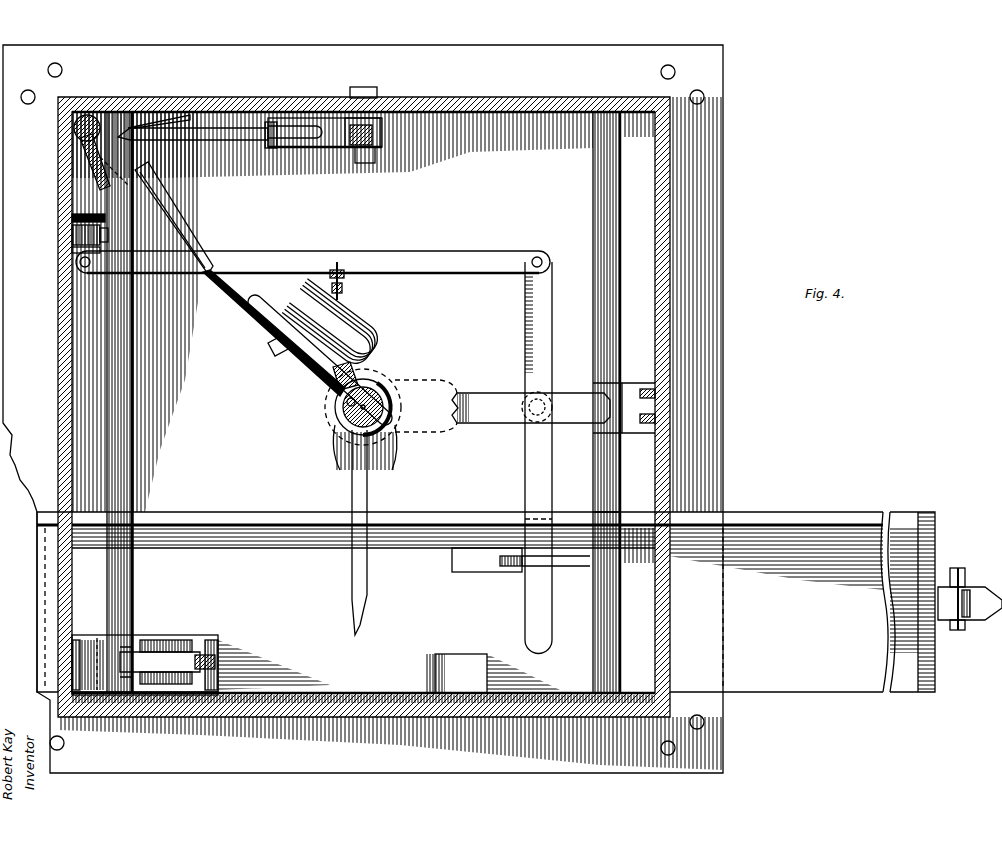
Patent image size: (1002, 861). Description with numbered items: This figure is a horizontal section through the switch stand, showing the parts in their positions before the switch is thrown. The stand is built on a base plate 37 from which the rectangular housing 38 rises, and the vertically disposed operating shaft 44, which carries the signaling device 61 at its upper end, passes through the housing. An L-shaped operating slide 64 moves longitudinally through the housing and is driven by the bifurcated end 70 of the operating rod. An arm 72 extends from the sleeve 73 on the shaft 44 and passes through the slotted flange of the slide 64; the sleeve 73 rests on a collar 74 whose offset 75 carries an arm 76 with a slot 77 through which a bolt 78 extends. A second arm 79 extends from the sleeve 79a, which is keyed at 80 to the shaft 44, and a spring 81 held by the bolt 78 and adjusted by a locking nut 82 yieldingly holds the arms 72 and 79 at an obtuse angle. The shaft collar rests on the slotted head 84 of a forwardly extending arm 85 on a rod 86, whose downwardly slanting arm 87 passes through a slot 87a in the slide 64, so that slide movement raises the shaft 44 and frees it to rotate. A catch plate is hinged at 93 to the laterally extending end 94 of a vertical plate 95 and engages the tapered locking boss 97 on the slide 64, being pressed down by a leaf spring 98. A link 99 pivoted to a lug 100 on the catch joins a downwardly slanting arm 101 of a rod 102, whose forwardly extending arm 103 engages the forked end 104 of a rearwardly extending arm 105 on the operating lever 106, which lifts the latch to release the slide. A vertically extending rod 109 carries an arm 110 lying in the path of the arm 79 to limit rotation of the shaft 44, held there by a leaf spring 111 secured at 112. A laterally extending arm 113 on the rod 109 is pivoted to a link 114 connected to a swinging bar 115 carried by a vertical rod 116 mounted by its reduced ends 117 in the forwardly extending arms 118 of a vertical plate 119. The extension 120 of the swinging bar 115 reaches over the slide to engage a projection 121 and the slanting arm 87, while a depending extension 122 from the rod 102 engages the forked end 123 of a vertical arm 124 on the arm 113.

The base plate 37 is at (364, 386).
The rectangular housing 38 is at (58, 398).
The operating shaft 44 is at (350, 435).
The signaling device 61 is at (965, 625).
The operating slide 64 is at (755, 540).
The bifurcated end 70 is at (968, 585).
The arm 72 is at (350, 575).
The sleeve 73 is at (355, 420).
The collar 74 is at (383, 430).
The offset 75 is at (375, 372).
The arm 76 is at (300, 350).
The slot 77 is at (275, 322).
The bolt 78 is at (340, 268).
The arm 79 is at (240, 310).
The sleeve 79a is at (340, 430).
The key 80 is at (343, 400).
The spring 81 is at (380, 335).
The locking nut 82 is at (345, 282).
The slotted head 84 is at (420, 378).
The forwardly extending arm 85 is at (531, 408).
The rod 86 is at (598, 203).
The downwardly slanting arm 87 is at (568, 568).
The slot 87a is at (470, 574).
The hinge 93 is at (97, 636).
The laterally extending end 94 is at (85, 712).
The vertical plate 95 is at (78, 636).
The tapered locking boss 97 is at (492, 673).
The leaf spring 98 is at (162, 642).
The link 99 is at (210, 656).
The lug 100 is at (225, 650).
The downwardly slanting arm 101 is at (185, 655).
The rod 102 is at (133, 575).
The forwardly extending arm 103 is at (218, 130).
The forked end 104 is at (272, 122).
The rearwardly extending arm 105 is at (308, 118).
The operating lever 106 is at (385, 128).
The vertically extending rod 109 is at (92, 115).
The arm 110 is at (207, 256).
The leaf spring 111 is at (168, 125).
The bolt 112 is at (155, 128).
The laterally extending arm 113 is at (90, 175).
The link 114 is at (393, 258).
The swinging bar 115 is at (545, 318).
The vertical rod 116 is at (530, 420).
The reduced ends 117 is at (545, 390).
The forwardly extending arms 118 is at (655, 393).
The vertical plate 119 is at (655, 420).
The extension 120 is at (530, 592).
The projection 121 is at (510, 520).
The depending extension 122 is at (72, 262).
The forked end 123 is at (75, 235).
The vertical arm 124 is at (92, 216).